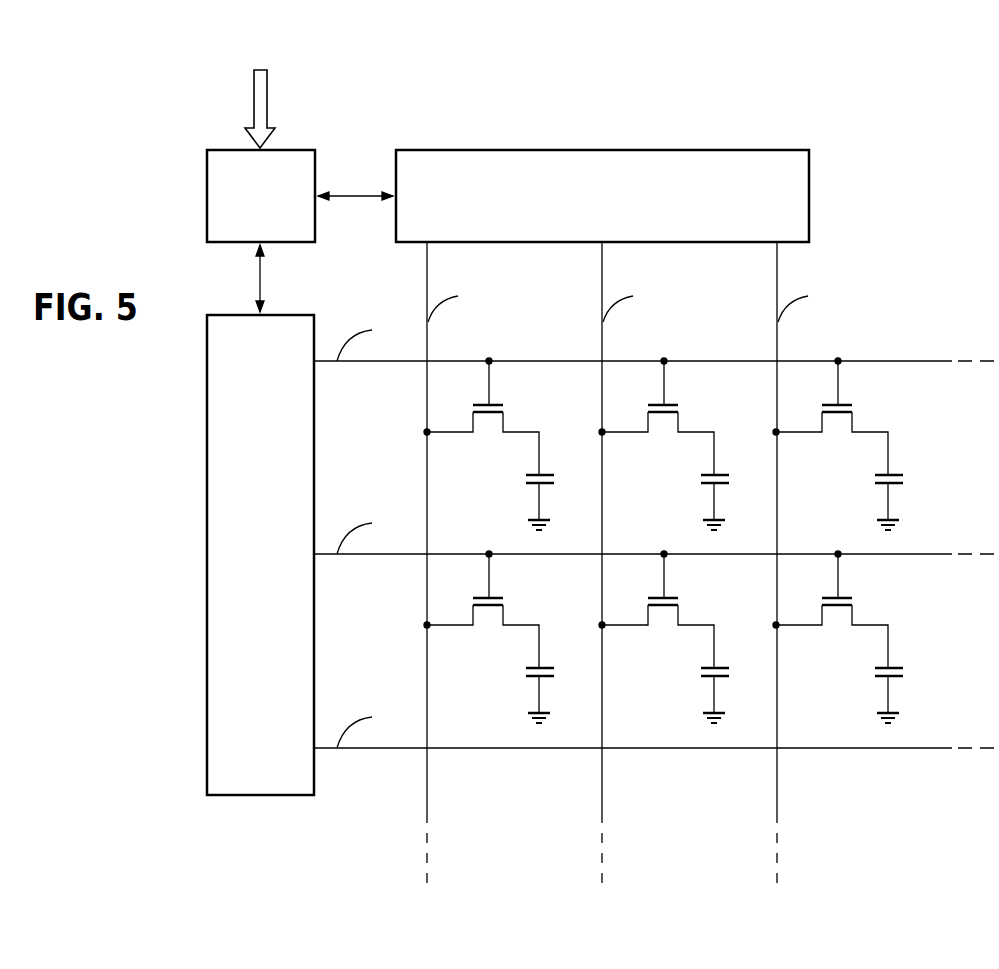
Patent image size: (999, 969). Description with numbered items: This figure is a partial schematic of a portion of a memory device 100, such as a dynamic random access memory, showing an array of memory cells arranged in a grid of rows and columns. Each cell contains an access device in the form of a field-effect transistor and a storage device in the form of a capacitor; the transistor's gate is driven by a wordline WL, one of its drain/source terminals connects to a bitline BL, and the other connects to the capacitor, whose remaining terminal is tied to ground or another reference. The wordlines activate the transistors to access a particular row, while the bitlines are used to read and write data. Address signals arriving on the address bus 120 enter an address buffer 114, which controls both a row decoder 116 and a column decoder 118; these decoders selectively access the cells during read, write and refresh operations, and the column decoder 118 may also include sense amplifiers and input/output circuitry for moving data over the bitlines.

The memory device 100 is at (890, 195).
The address buffer 114 is at (298, 149).
The row decoder 116 is at (232, 797).
The column decoder 118 is at (738, 150).
The address bus 120 is at (252, 118).